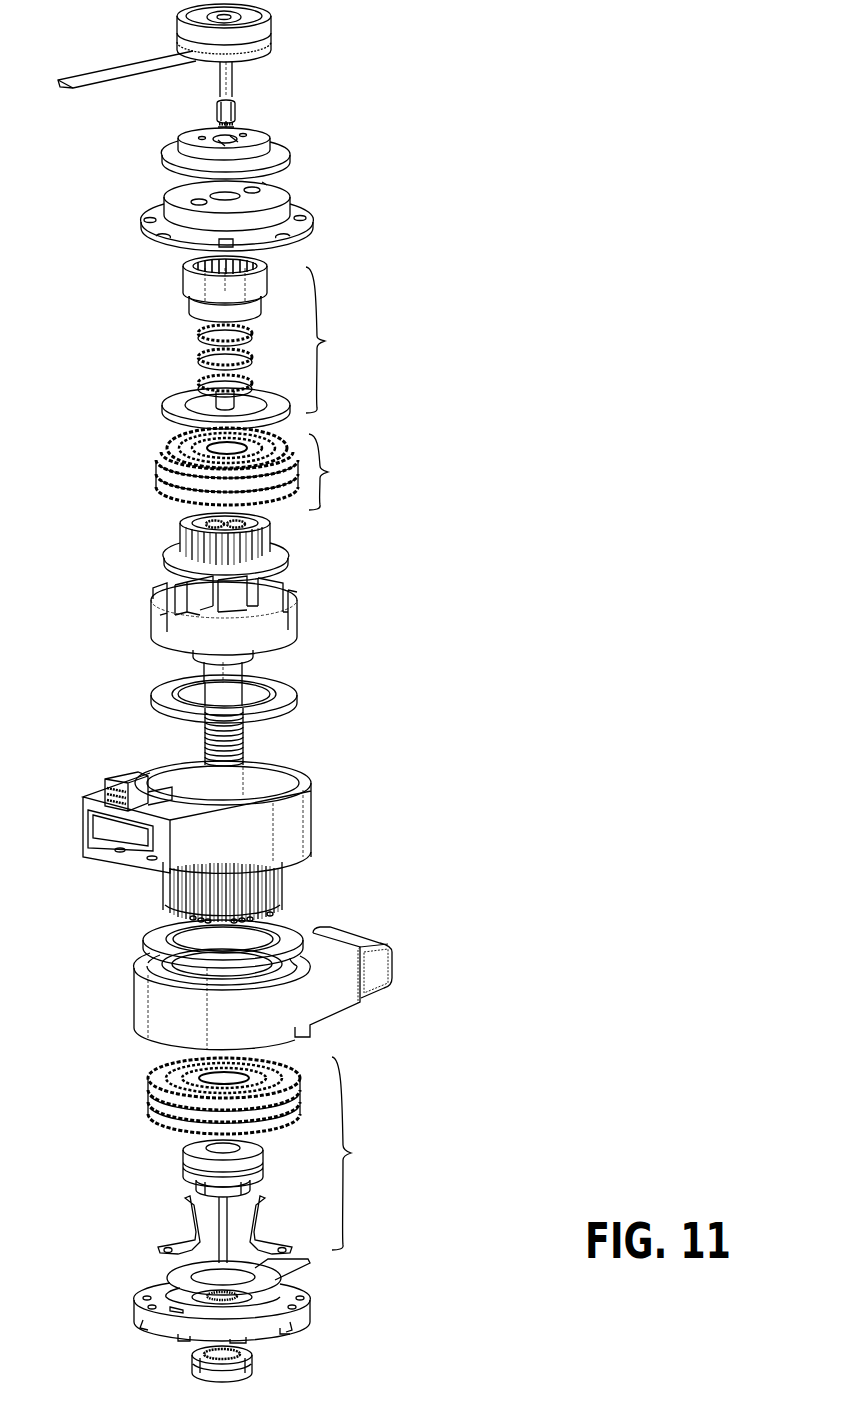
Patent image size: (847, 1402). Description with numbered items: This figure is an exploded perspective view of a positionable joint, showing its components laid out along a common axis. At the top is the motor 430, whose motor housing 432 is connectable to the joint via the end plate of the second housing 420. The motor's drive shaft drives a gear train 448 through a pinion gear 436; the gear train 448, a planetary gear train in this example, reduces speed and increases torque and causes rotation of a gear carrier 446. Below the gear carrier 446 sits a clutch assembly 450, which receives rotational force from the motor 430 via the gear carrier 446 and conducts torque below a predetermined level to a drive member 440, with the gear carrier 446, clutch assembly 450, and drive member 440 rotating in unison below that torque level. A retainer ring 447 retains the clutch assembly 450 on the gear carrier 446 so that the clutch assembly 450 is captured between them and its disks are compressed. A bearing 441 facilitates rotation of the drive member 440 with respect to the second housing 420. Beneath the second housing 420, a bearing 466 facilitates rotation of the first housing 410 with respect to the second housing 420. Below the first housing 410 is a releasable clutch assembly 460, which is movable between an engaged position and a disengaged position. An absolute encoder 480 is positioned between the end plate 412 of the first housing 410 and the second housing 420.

The motor 430 is at (275, 29).
The pinion gear 436 is at (239, 113).
The motor housing 432 is at (300, 214).
The gear train 448 is at (282, 334).
The retainer ring 447 is at (166, 409).
The clutch assembly 450 is at (269, 469).
The gear carrier 446 is at (167, 550).
The drive member 440 is at (287, 613).
The bearing 441 is at (151, 699).
The second housing 420 is at (335, 793).
The bearing 466 is at (319, 894).
The first housing 410 is at (104, 971).
The releasable clutch assembly 460 is at (276, 1160).
The absolute encoder 480 is at (181, 1279).
The end plate 412 is at (311, 1288).